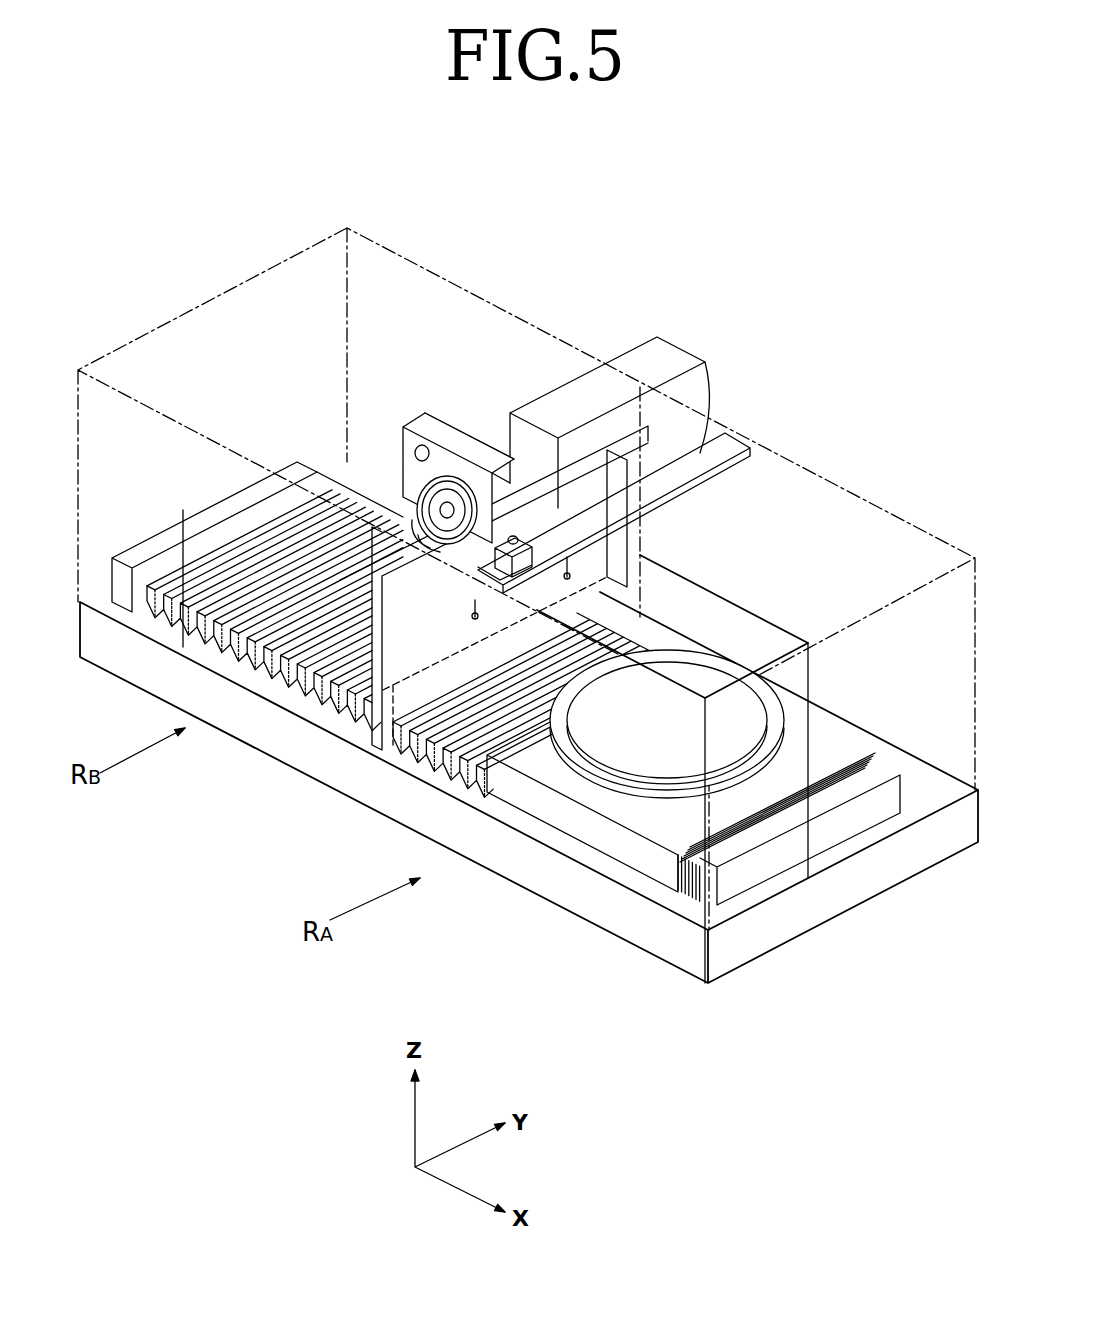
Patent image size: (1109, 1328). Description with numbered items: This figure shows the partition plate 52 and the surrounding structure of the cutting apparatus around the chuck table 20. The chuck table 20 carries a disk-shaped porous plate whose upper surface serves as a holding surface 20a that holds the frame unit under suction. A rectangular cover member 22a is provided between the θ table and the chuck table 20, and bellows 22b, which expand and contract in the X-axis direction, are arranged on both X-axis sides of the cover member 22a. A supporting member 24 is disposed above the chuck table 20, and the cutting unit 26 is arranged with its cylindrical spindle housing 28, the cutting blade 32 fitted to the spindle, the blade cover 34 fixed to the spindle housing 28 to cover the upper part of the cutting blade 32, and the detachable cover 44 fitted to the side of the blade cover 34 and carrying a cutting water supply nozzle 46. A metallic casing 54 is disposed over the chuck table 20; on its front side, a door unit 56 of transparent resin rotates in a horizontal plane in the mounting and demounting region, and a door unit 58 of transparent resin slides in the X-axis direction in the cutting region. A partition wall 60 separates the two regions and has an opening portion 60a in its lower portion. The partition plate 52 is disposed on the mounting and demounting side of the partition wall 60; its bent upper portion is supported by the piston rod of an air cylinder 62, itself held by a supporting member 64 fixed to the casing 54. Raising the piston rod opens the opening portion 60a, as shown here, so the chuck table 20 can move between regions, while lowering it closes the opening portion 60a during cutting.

The chuck table 20 is at (722, 794).
The holding surface 20a is at (645, 742).
The cover member 22a is at (505, 765).
The bellows 22b is at (125, 625).
The supporting member 24 is at (663, 352).
The cutting unit 26 is at (537, 385).
The spindle housing 28 is at (503, 433).
The cutting blade 32 is at (467, 477).
The blade cover 34 is at (439, 433).
The detachable cover 44 is at (413, 427).
The cutting water supply nozzle 46 is at (438, 490).
The partition plate 52 is at (293, 690).
The casing 54 is at (905, 512).
The door unit 56 is at (743, 613).
The door unit 58 is at (225, 527).
The partition wall 60 is at (350, 463).
The opening portion 60a is at (393, 722).
The air cylinder 62 is at (523, 567).
The supporting member 64 is at (728, 450).